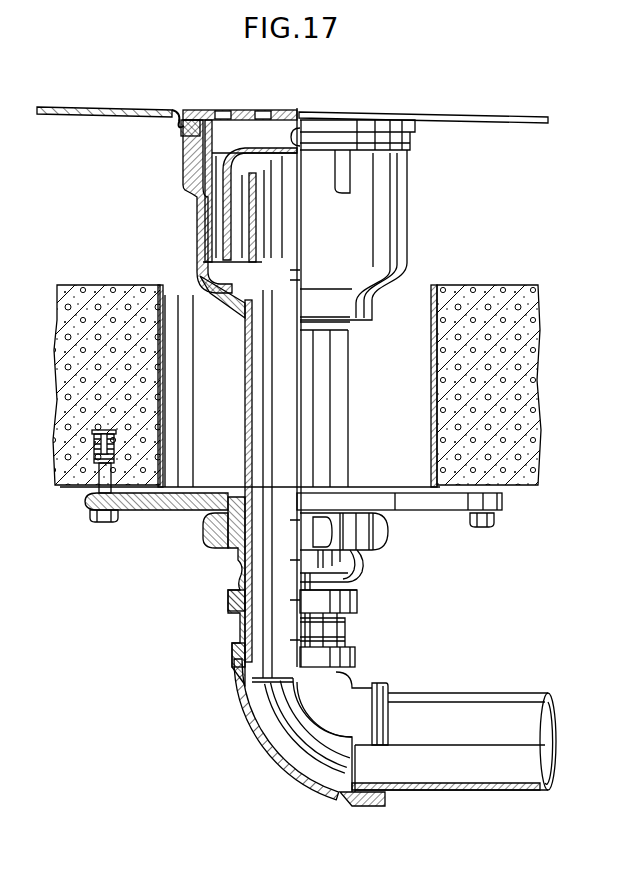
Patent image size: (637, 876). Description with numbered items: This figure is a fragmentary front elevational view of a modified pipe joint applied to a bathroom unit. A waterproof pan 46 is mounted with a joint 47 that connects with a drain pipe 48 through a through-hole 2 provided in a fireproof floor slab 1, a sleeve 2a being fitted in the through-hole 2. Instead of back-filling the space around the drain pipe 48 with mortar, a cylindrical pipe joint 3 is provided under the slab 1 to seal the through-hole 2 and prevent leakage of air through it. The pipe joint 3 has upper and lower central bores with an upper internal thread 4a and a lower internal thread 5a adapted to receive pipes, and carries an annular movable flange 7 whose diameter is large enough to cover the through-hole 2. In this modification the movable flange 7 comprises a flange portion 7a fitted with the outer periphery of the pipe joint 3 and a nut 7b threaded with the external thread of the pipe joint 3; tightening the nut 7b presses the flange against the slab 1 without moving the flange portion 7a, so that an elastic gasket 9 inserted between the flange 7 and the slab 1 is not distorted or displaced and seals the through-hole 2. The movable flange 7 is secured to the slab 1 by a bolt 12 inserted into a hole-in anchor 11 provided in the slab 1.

The waterproof pan 46 is at (110, 107).
The joint 47 is at (197, 214).
The sleeve 2a is at (162, 283).
The through-hole 2 is at (188, 287).
The hole-in anchor 11 is at (92, 435).
The fireproof floor slab 1 is at (55, 486).
The bolt 12 is at (102, 519).
The elastic gasket 9 is at (140, 505).
The nut 7b is at (203, 523).
The lower internal thread 5a is at (234, 551).
The pipe joint 3 is at (227, 599).
The upper internal thread 4a is at (245, 628).
The movable flange 7 is at (405, 512).
The flange portion 7a is at (433, 508).
The drain pipe 48 is at (462, 792).